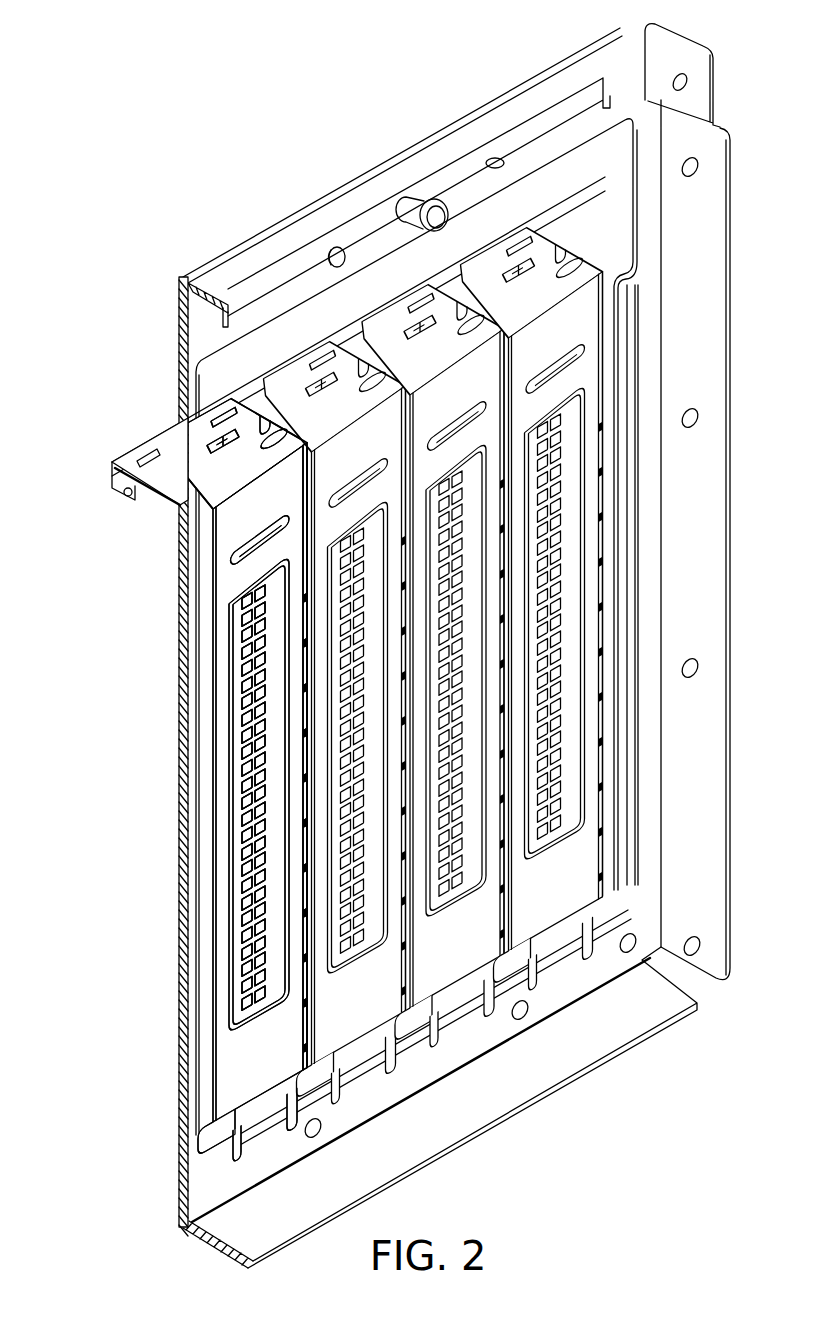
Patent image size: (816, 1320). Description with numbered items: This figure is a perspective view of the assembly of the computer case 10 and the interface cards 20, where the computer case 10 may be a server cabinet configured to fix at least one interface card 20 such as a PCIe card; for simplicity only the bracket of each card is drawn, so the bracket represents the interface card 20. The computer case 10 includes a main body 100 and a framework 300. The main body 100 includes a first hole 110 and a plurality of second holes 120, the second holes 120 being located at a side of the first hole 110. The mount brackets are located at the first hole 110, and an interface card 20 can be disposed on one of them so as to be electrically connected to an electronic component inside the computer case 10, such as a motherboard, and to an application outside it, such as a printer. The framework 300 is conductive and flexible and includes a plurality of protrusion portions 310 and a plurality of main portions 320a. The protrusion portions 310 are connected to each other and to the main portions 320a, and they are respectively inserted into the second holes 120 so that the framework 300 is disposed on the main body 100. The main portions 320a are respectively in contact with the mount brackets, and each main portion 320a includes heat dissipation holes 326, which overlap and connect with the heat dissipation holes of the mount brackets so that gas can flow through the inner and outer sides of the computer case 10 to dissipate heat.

The computer case 10 is at (157, 324).
The interface card 20 is at (218, 855).
The main body 100 is at (198, 352).
The first hole 110 is at (229, 369).
The second holes 120 is at (145, 460).
The framework 300 is at (206, 548).
The protrusion portions 310 is at (435, 275).
The main portions 320a is at (217, 775).
The heat dissipation holes 326 is at (318, 664).